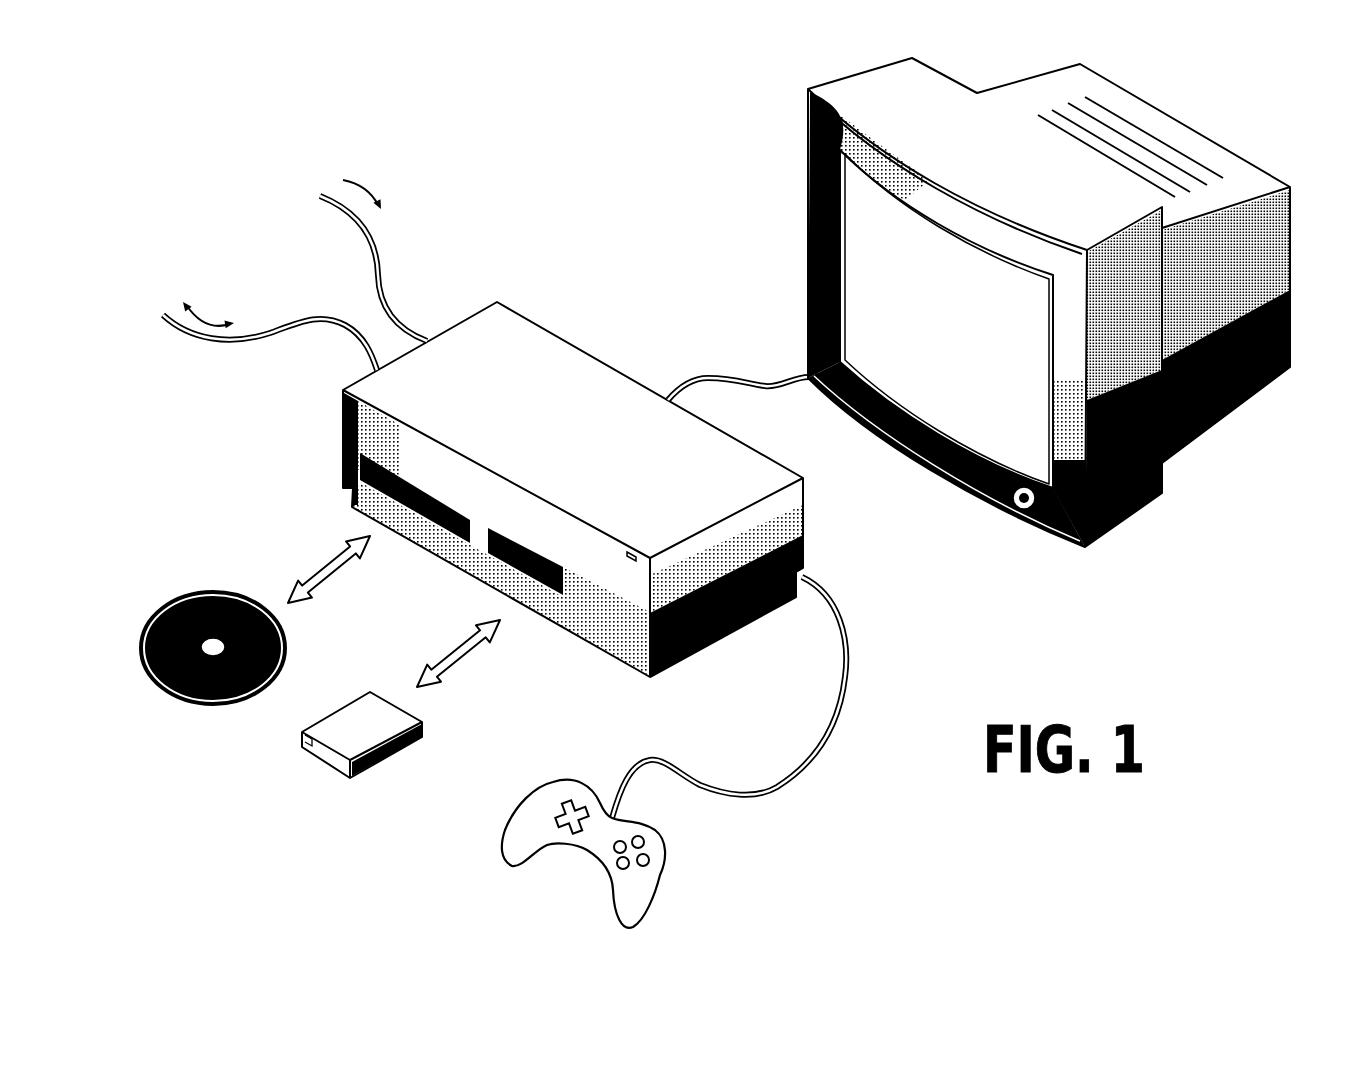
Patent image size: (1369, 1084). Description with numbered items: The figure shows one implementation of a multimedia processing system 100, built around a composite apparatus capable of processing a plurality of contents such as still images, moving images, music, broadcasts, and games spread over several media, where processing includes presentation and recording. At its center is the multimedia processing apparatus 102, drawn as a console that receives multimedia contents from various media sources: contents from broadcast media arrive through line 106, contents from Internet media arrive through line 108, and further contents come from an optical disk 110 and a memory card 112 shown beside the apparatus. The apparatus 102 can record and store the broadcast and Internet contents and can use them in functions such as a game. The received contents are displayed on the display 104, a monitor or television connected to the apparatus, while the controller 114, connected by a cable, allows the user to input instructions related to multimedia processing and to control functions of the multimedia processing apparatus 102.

The multimedia processing system 100 is at (542, 125).
The multimedia processing apparatus 102 is at (567, 342).
The display 104 is at (1208, 130).
The line 106 is at (392, 307).
The line 108 is at (220, 342).
The optical disk 110 is at (193, 592).
The memory card 112 is at (322, 762).
The controller 114 is at (665, 867).